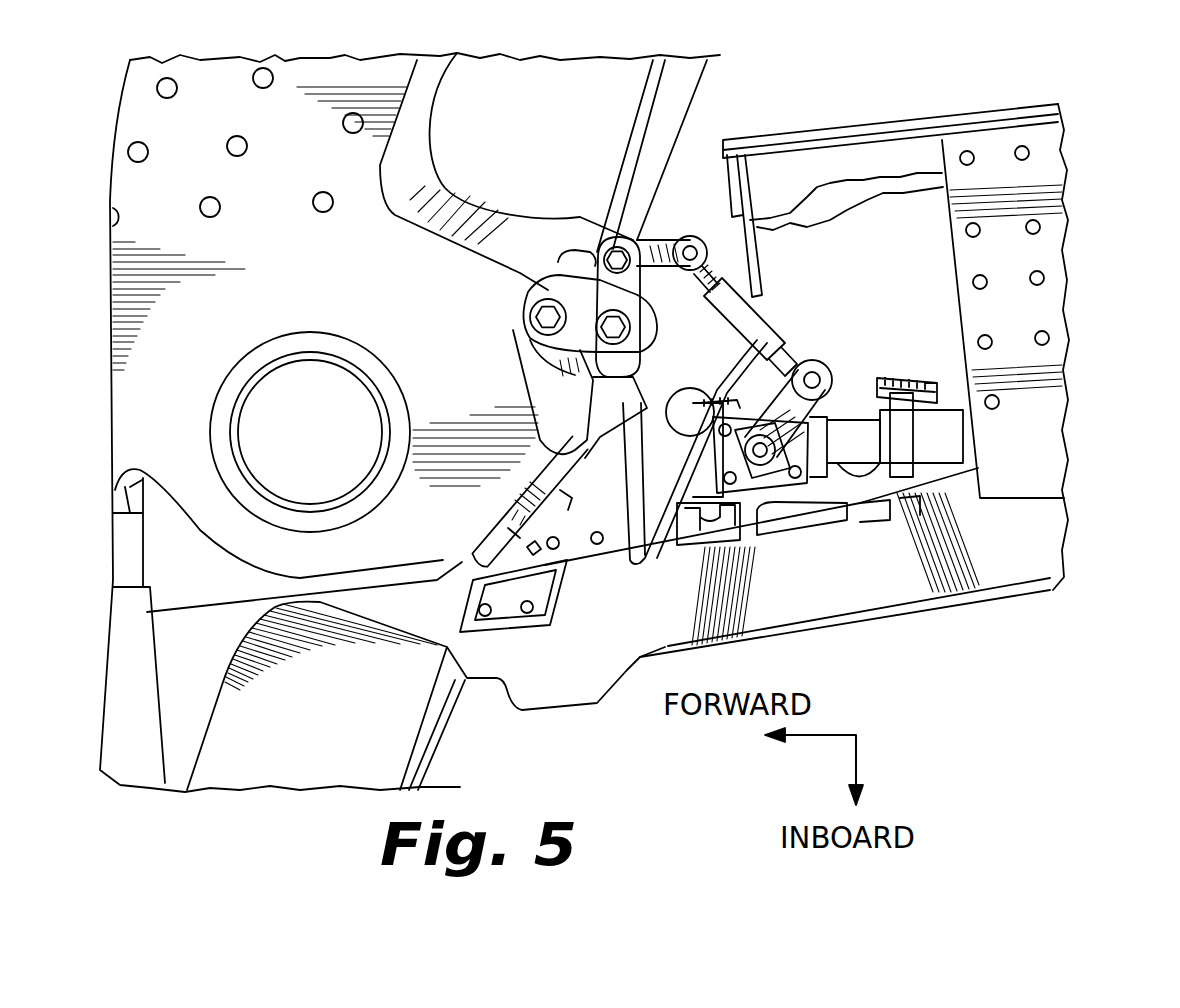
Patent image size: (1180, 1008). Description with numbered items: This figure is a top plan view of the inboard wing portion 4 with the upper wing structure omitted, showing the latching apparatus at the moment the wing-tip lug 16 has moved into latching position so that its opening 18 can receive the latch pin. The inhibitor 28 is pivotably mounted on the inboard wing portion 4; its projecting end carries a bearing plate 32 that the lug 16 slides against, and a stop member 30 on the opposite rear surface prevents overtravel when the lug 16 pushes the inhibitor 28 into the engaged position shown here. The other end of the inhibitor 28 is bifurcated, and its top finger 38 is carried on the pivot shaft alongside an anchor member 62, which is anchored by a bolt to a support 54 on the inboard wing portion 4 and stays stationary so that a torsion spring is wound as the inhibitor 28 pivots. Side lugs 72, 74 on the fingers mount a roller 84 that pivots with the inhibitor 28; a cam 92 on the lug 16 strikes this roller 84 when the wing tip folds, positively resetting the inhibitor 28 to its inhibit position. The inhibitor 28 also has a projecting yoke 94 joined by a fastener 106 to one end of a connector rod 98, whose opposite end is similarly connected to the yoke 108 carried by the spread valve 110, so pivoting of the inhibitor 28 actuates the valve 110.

The inboard wing portion 4 is at (1077, 193).
The lug 16 is at (402, 316).
The opening 18 is at (272, 385).
The inhibitor 28 is at (590, 483).
The stop member 30 is at (553, 600).
The bearing plate 32 is at (507, 513).
The finger 38 is at (580, 350).
The support 54 is at (587, 260).
The anchor member 62 is at (618, 307).
The side lug 72 is at (520, 310).
The side lug 74 is at (543, 273).
The roller 84 is at (567, 330).
The cam 92 is at (570, 457).
The yoke 94 is at (690, 235).
The connector rod 98 is at (767, 313).
The fastener 106 is at (703, 240).
The yoke 108 is at (837, 373).
The spread valve 110 is at (923, 370).